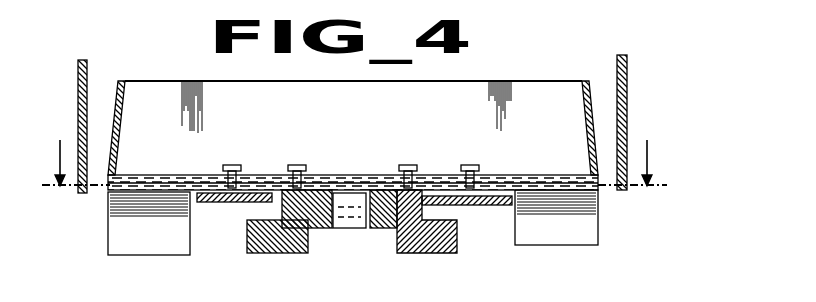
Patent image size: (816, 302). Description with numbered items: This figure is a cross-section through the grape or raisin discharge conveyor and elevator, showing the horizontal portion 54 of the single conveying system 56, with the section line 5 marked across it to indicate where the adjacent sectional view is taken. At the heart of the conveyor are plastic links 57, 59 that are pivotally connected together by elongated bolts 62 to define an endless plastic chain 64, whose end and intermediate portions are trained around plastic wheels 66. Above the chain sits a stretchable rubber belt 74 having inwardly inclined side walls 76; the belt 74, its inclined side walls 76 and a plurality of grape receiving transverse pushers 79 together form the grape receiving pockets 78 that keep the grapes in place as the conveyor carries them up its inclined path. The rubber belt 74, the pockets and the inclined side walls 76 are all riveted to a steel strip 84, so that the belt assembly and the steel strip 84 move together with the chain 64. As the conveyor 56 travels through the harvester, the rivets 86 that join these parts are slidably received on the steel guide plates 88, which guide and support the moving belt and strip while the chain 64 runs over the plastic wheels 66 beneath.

The section line 5- 5 is at (353, 163).
The horizontal portion 54 is at (118, 99).
The single conveying system 56 is at (640, 110).
The plastic link 57 is at (392, 228).
The plastic link 59 is at (445, 253).
The elongated bolt 62 is at (358, 176).
The endless plastic chain 64 is at (246, 252).
The plastic wheel 66 is at (117, 244).
The stretchable rubber belt 74 is at (424, 176).
The inclined side wall 76 is at (124, 110).
The grape receiving pocket 78 is at (214, 100).
The grape receiving transverse pusher 79 is at (517, 81).
The steel strip 84 is at (112, 219).
The rivet 86 is at (232, 163).
The steel guide plate 88 is at (247, 205).